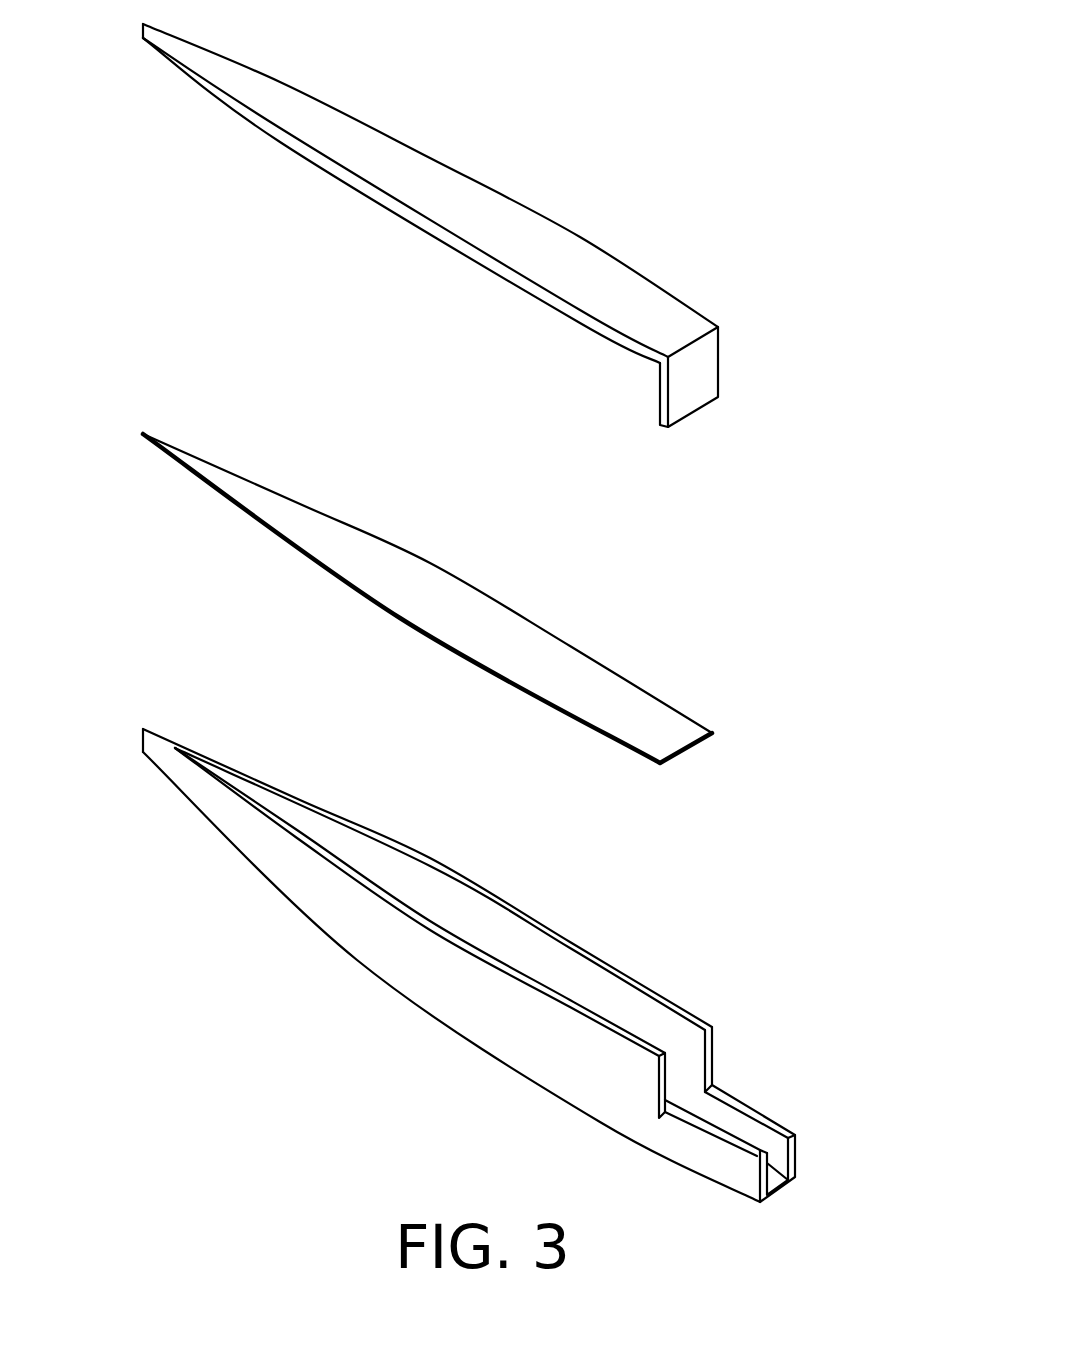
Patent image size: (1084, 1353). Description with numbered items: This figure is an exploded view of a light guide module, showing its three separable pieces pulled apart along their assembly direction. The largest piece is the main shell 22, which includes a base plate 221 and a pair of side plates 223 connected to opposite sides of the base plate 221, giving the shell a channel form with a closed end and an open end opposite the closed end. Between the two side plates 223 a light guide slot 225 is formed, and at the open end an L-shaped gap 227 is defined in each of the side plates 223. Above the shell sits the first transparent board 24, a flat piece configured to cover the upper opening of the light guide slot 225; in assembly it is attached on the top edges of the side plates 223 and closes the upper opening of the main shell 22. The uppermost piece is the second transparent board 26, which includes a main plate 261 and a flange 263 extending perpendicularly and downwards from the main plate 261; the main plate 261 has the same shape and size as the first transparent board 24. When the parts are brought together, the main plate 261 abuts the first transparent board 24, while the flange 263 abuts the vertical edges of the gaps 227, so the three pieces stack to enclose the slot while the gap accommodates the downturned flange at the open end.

The main shell 22 is at (504, 965).
The base plate 221 is at (772, 1177).
The side plates 223 is at (437, 985).
The light guide slot 225 is at (405, 878).
The L-shaped gap 227 is at (746, 1105).
The first transparent board 24 is at (603, 693).
The second transparent board 26 is at (479, 225).
The main plate 261 is at (655, 313).
The flange 263 is at (695, 372).